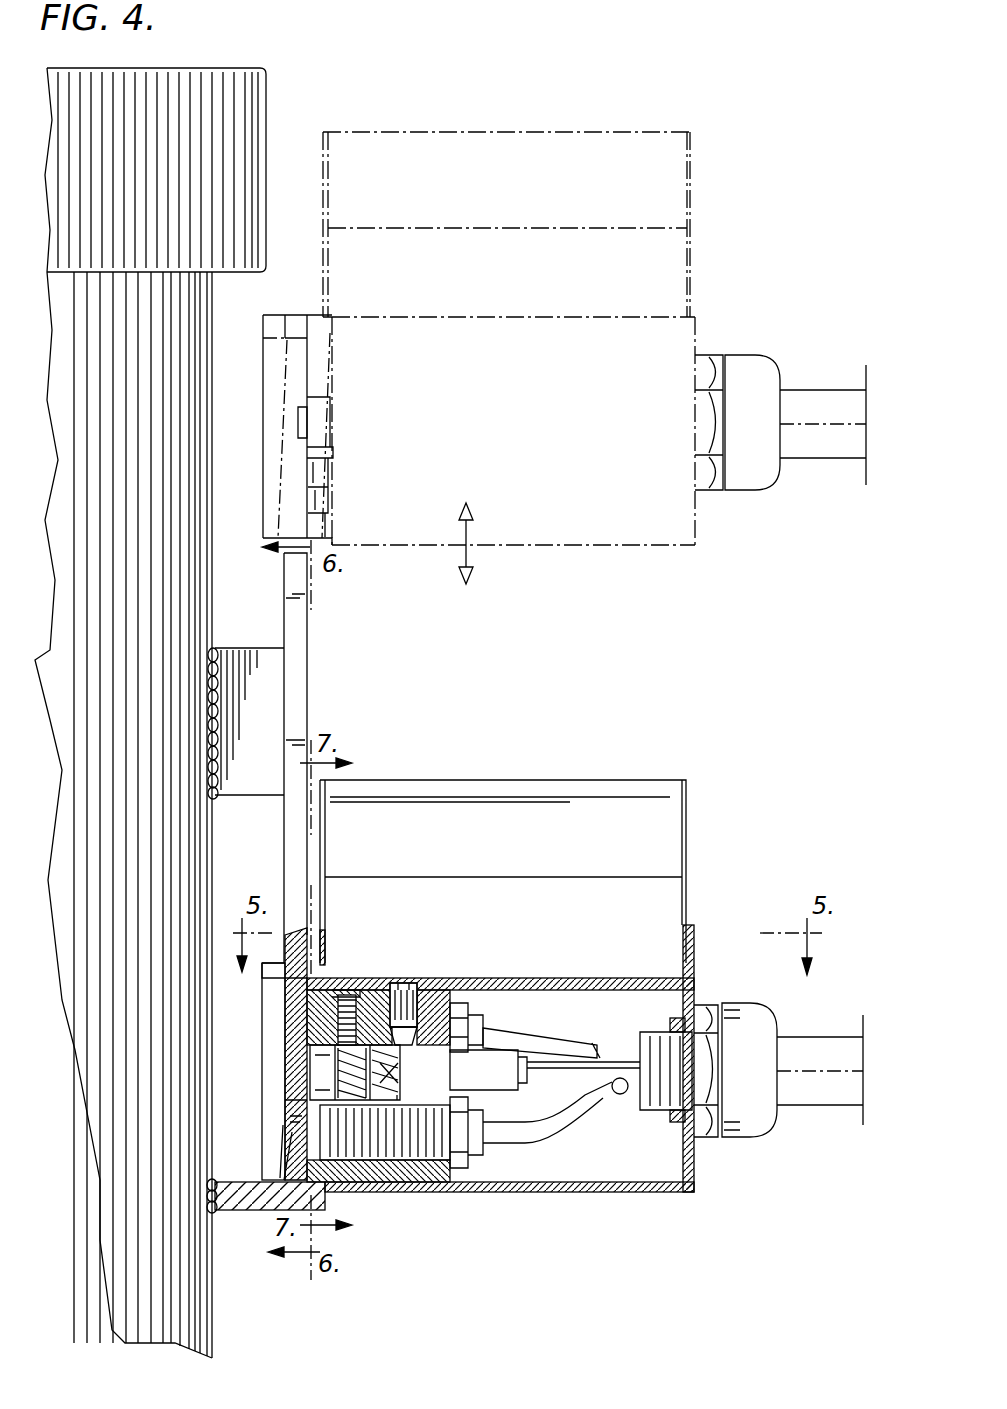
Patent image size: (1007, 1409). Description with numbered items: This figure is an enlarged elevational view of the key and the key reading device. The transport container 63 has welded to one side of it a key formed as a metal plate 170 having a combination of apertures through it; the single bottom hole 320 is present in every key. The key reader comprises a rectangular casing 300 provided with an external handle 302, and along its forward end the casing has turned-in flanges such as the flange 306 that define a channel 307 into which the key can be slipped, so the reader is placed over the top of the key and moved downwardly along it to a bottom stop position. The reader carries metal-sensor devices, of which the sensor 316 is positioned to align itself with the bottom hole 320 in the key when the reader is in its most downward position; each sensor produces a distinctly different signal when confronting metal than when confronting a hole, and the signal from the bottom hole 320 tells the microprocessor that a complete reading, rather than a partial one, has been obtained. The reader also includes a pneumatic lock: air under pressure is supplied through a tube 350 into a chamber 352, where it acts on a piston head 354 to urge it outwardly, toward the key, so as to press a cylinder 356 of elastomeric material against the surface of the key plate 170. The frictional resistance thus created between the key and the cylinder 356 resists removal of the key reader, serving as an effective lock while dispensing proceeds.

The transport container 63 is at (262, 96).
The metal plate 170 is at (310, 637).
The rectangular casing 300 is at (553, 547).
The external handle 302 is at (548, 130).
The turned-in flange 306 is at (263, 385).
The channel 307 is at (297, 404).
The metal-sensor device 316 is at (397, 1175).
The bottom hole 320 is at (297, 1107).
The tube 350 is at (560, 1100).
The chamber 352 is at (422, 1058).
The piston head 354 is at (397, 1097).
The cylinder of elastomeric material 356 is at (312, 1066).